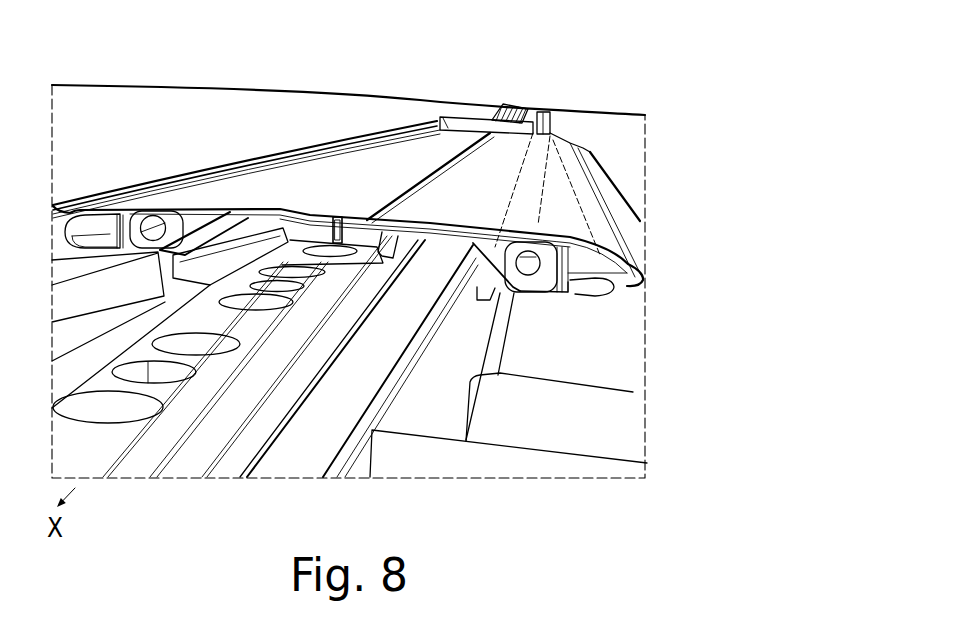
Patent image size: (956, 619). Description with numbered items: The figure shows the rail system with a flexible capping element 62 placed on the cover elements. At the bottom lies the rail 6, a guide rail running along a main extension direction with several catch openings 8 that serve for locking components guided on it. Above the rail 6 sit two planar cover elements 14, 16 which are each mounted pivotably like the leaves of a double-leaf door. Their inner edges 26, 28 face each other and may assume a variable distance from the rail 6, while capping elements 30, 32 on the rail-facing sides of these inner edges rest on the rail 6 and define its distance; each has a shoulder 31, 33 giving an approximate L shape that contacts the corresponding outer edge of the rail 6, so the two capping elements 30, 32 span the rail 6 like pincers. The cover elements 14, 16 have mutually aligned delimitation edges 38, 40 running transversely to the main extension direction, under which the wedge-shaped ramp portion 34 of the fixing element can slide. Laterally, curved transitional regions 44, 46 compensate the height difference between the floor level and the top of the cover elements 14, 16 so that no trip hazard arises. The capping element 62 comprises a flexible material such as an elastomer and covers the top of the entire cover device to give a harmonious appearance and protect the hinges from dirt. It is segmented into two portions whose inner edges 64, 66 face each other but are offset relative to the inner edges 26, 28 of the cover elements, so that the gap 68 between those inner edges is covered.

The rail 6 is at (97, 447).
The catch openings 8 is at (128, 412).
The cover element 14 is at (197, 208).
The cover element 16 is at (505, 213).
The inner edge 26 is at (322, 218).
The inner edge 28 is at (361, 235).
The capping element 30 is at (286, 214).
The shoulder 31 is at (286, 229).
The capping element 32 is at (368, 215).
The shoulder 33 is at (395, 265).
The ramp portion 34 is at (443, 120).
The delimitation edge 38 is at (449, 182).
The delimitation edge 40 is at (497, 250).
The transitional region 44 is at (103, 223).
The transitional region 46 is at (585, 270).
The capping element 62 is at (352, 170).
The inner edge 64 is at (432, 160).
The inner edge 66 is at (541, 125).
The gap 68 is at (338, 254).